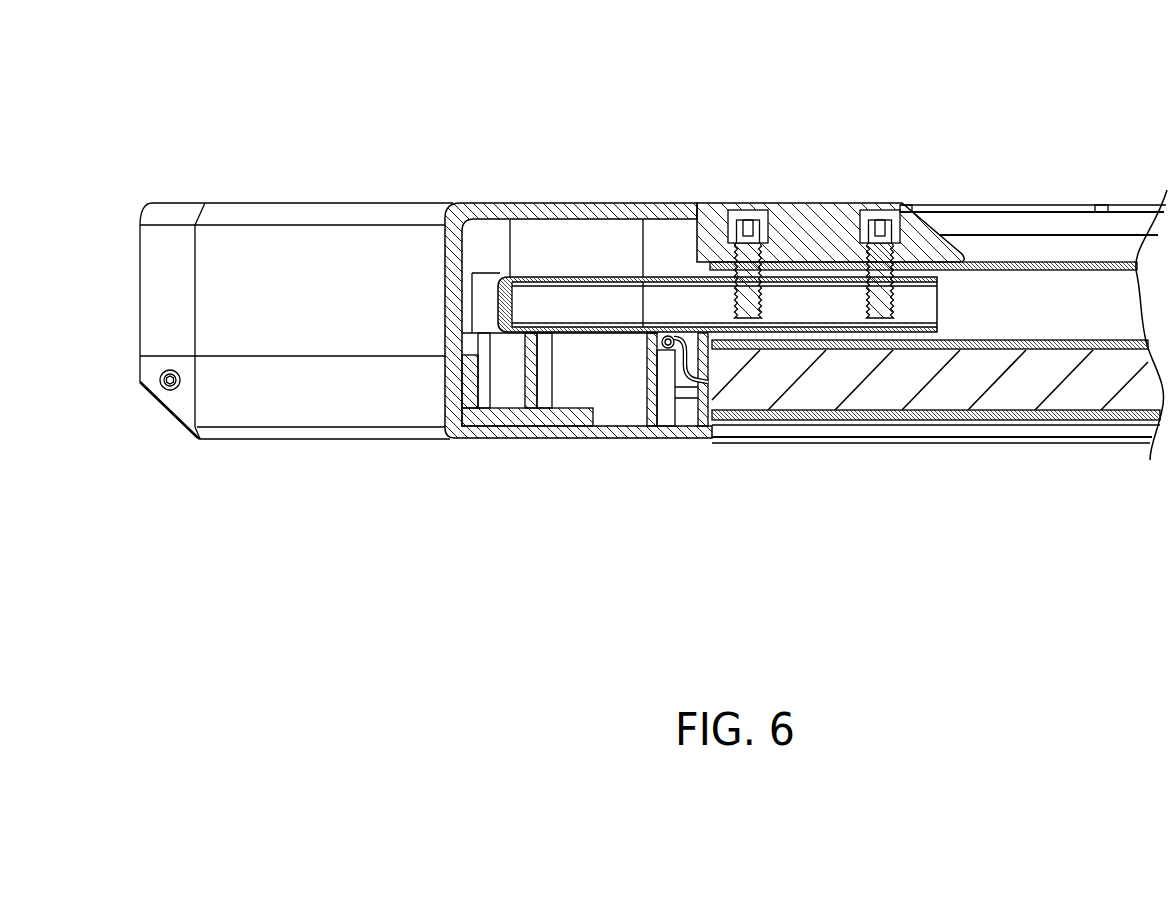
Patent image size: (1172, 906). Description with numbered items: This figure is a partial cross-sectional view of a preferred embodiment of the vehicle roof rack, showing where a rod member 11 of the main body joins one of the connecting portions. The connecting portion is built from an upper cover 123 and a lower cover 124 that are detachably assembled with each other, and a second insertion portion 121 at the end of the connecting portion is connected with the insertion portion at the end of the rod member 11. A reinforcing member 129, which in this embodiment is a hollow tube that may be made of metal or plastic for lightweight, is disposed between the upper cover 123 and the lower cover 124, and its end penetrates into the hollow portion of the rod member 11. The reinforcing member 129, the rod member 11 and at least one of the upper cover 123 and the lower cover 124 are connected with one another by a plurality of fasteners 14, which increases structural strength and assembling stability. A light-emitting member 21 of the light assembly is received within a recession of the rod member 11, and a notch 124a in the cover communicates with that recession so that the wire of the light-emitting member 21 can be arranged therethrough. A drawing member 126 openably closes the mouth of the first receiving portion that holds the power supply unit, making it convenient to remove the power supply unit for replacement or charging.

The rod member 11 is at (1072, 233).
The fastener 14 is at (747, 232).
The light-emitting member 21 is at (925, 403).
The second insertion portion 121 is at (920, 228).
The upper cover 123 is at (312, 230).
The lower cover 124 is at (570, 457).
The notch 124a is at (702, 352).
The drawing member 126 is at (450, 430).
The reinforcing member 129 is at (558, 278).